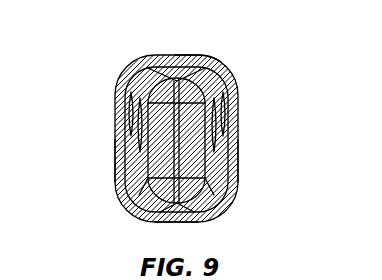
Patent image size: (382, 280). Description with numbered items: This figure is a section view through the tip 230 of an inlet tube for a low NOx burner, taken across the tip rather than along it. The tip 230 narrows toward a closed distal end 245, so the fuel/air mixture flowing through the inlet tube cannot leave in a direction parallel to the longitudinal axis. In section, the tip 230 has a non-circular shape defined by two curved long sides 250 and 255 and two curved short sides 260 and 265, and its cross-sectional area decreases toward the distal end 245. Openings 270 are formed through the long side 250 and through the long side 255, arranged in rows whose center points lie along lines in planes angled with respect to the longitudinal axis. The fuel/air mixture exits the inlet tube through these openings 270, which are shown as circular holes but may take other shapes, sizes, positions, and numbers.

The tip 230 is at (229, 196).
The distal end 245 is at (173, 122).
The long side 250 is at (235, 163).
The long side 255 is at (118, 162).
The short side 260 is at (192, 56).
The short side 265 is at (175, 216).
The openings 270 is at (143, 118).